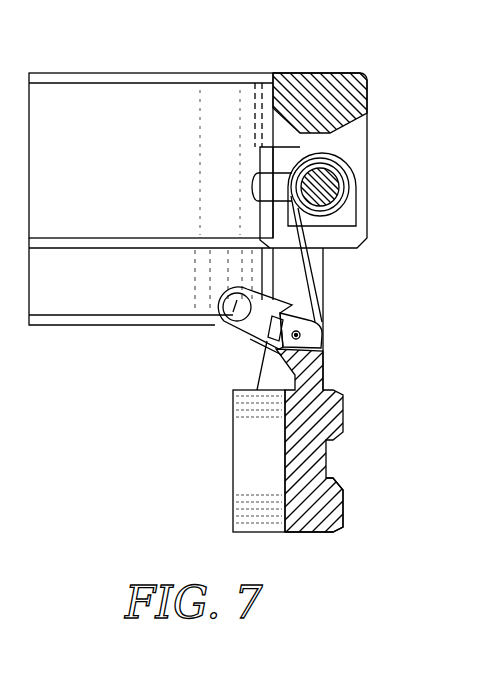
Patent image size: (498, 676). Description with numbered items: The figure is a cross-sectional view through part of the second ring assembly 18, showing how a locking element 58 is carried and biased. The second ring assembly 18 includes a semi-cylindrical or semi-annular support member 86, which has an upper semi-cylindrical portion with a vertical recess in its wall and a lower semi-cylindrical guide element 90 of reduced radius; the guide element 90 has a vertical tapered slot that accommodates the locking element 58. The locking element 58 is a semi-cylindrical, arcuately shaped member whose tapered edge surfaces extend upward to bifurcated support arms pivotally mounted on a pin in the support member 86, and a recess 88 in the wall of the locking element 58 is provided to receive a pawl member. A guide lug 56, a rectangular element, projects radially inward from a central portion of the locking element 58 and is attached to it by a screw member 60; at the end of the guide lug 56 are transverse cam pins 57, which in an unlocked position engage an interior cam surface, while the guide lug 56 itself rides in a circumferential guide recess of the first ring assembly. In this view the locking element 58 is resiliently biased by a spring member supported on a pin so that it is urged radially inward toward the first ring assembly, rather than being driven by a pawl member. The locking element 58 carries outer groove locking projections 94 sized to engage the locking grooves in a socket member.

The second ring assembly 18 is at (111, 108).
The support member 86 is at (320, 100).
The recess 88 is at (355, 145).
The guide element 90 is at (131, 301).
The cam pins 57 is at (228, 320).
The guide lug 56 is at (262, 323).
The screw member 60 is at (298, 338).
The locking element 58 is at (332, 417).
The groove locking projections 94 is at (343, 503).